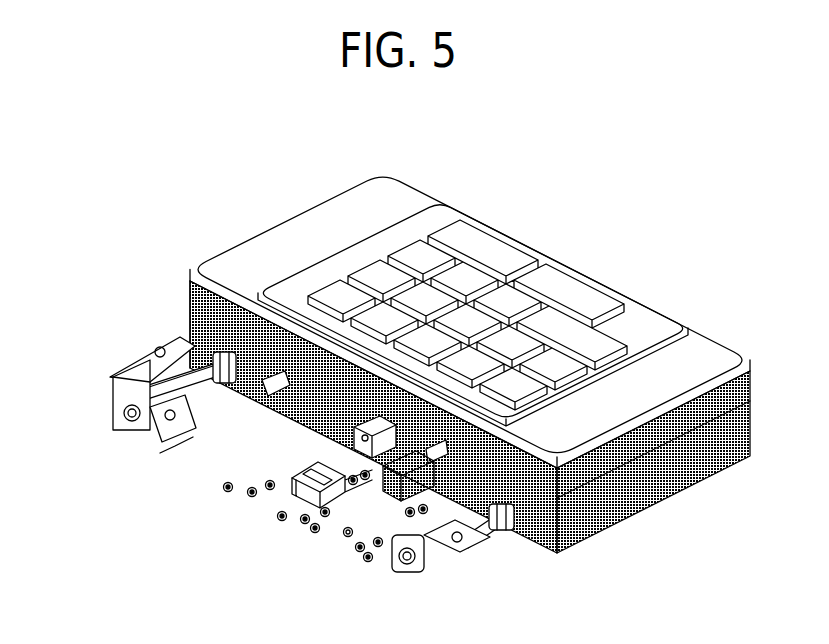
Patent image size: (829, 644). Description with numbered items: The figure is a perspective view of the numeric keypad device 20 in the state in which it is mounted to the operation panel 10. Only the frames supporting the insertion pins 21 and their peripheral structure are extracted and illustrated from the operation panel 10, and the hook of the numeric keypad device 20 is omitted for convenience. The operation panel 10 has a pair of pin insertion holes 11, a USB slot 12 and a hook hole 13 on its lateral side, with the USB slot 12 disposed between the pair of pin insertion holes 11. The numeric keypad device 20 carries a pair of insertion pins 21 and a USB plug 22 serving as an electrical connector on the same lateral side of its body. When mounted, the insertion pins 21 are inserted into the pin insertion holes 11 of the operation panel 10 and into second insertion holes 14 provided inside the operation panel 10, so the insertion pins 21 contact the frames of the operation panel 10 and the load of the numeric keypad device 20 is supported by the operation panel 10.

The operation panel 10 is at (348, 417).
The pin insertion holes 11 is at (214, 355).
The USB slot 12 is at (447, 454).
The hook hole 13 is at (356, 432).
The second insertion holes 14 is at (128, 404).
The numeric keypad device 20 is at (607, 205).
The insertion pins 21 is at (214, 390).
The USB plug 22 is at (394, 476).